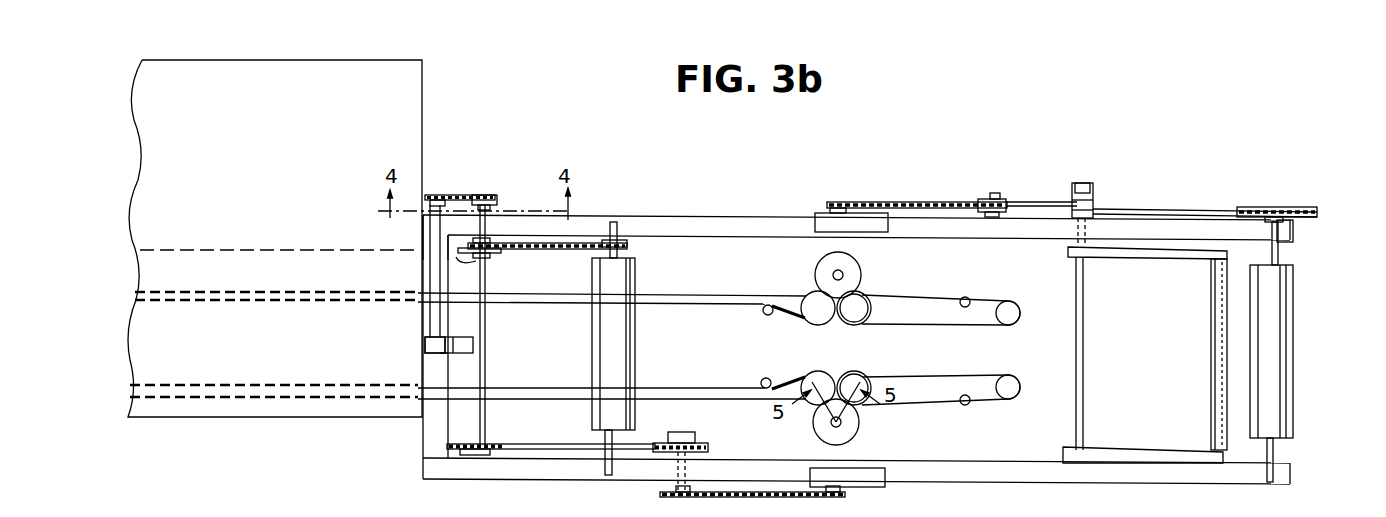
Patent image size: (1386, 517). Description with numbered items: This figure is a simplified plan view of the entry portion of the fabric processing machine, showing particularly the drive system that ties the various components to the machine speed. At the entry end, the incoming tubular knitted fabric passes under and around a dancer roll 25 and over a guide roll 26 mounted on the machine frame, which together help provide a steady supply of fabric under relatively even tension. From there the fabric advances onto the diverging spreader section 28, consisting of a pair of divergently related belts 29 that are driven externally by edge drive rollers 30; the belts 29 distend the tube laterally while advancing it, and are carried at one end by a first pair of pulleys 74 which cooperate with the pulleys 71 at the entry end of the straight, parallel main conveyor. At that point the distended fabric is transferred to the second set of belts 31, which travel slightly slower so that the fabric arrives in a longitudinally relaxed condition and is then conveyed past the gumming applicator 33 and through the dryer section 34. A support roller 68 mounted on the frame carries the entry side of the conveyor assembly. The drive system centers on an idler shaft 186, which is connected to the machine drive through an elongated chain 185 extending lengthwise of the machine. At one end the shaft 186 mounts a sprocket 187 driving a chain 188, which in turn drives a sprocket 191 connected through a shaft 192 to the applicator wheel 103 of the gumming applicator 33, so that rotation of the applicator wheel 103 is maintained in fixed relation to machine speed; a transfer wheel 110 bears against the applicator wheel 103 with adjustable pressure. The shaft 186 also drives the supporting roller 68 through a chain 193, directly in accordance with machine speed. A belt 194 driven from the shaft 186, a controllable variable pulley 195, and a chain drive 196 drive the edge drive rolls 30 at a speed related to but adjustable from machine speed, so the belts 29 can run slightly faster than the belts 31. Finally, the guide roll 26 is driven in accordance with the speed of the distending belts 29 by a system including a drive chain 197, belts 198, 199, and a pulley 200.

The dancer roll 25 is at (1214, 350).
The guide roll 26 is at (1283, 356).
The spreader section 28 is at (1002, 296).
The belts 29 is at (938, 294).
The edge drive rollers 30 is at (852, 275).
The belts 31 is at (730, 292).
The applicator 33 is at (448, 358).
The dryer section 34 is at (277, 422).
The support roller 68 is at (614, 346).
The pulleys 71 is at (823, 320).
The first pair of pulleys 74 is at (858, 322).
The applicator wheel 103 is at (425, 346).
The transfer wheel 110 is at (465, 347).
The chain 185 is at (482, 268).
The idler shaft 186 is at (484, 326).
The sprocket 187 is at (494, 200).
The chain 188 is at (468, 196).
The sprocket 191 is at (421, 231).
The shaft 192 is at (433, 266).
The chain 193 is at (585, 243).
The belt 194 is at (540, 444).
The controllable variable pulley 195 is at (695, 438).
The chain drive 196 is at (758, 497).
The drive chain 197 is at (887, 203).
The belt 198 is at (1016, 200).
The belt 199 is at (1178, 208).
The pulley 200 is at (1094, 196).